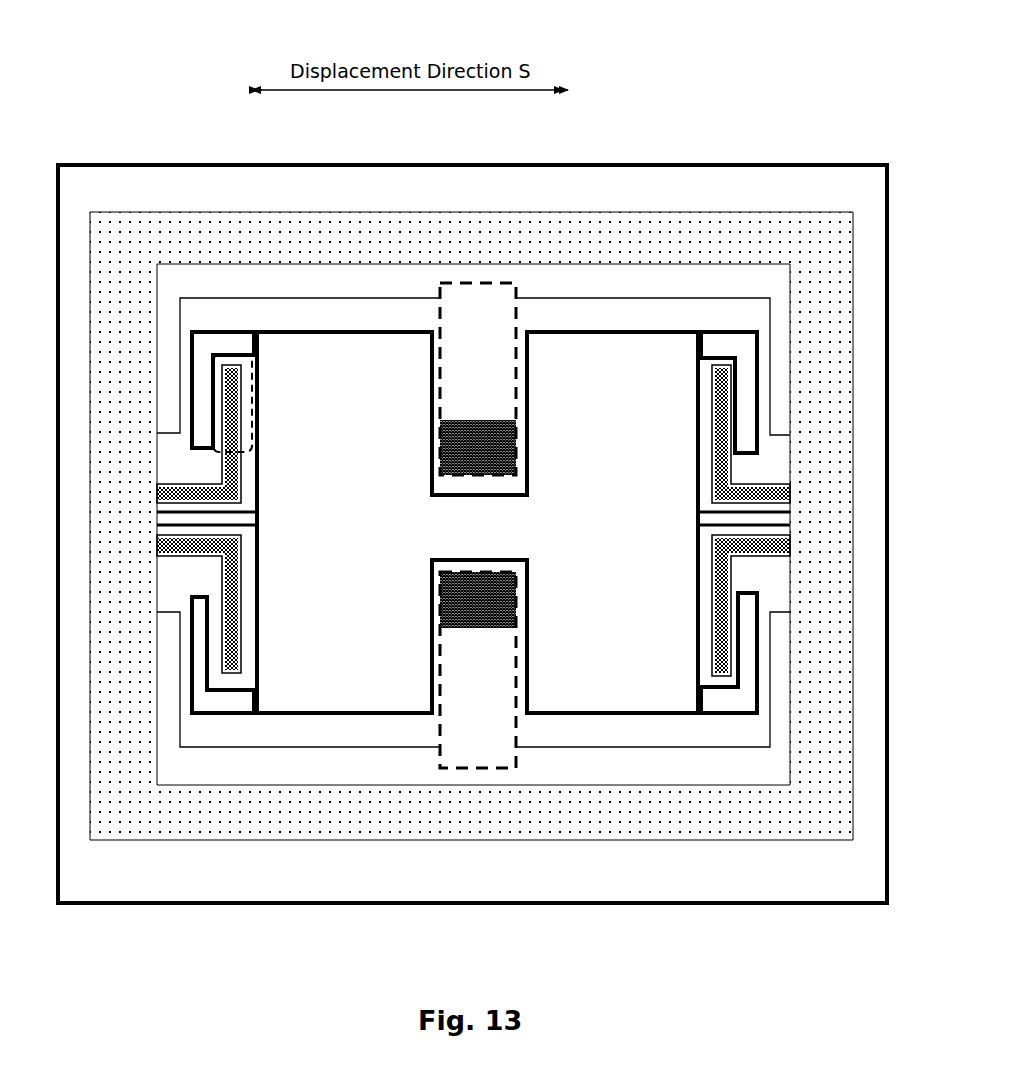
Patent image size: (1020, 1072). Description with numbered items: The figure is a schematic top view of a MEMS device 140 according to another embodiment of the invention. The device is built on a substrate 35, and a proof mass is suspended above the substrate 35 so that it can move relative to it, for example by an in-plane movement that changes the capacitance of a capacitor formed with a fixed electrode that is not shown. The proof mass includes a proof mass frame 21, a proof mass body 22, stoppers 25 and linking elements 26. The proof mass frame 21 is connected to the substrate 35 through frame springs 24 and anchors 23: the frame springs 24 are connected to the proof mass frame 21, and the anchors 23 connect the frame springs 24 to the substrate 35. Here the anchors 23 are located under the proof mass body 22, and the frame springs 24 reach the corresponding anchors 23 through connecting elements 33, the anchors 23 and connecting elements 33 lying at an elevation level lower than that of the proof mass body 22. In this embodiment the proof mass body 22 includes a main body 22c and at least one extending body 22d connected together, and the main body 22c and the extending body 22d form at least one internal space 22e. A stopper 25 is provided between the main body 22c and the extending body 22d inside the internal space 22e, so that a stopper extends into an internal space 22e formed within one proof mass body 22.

The MEMS device 140 is at (812, 92).
The substrate 35 is at (312, 905).
The proof mass frame 21 is at (519, 228).
The frame spring 24 is at (313, 300).
The proof mass body 22 is at (610, 396).
The main body 22c is at (372, 534).
The extending body 22d is at (207, 341).
The internal space 22e is at (256, 406).
The stopper 25 is at (178, 487).
The linking element 26 is at (257, 519).
The connecting element 33 is at (489, 399).
The anchor 23 is at (489, 459).